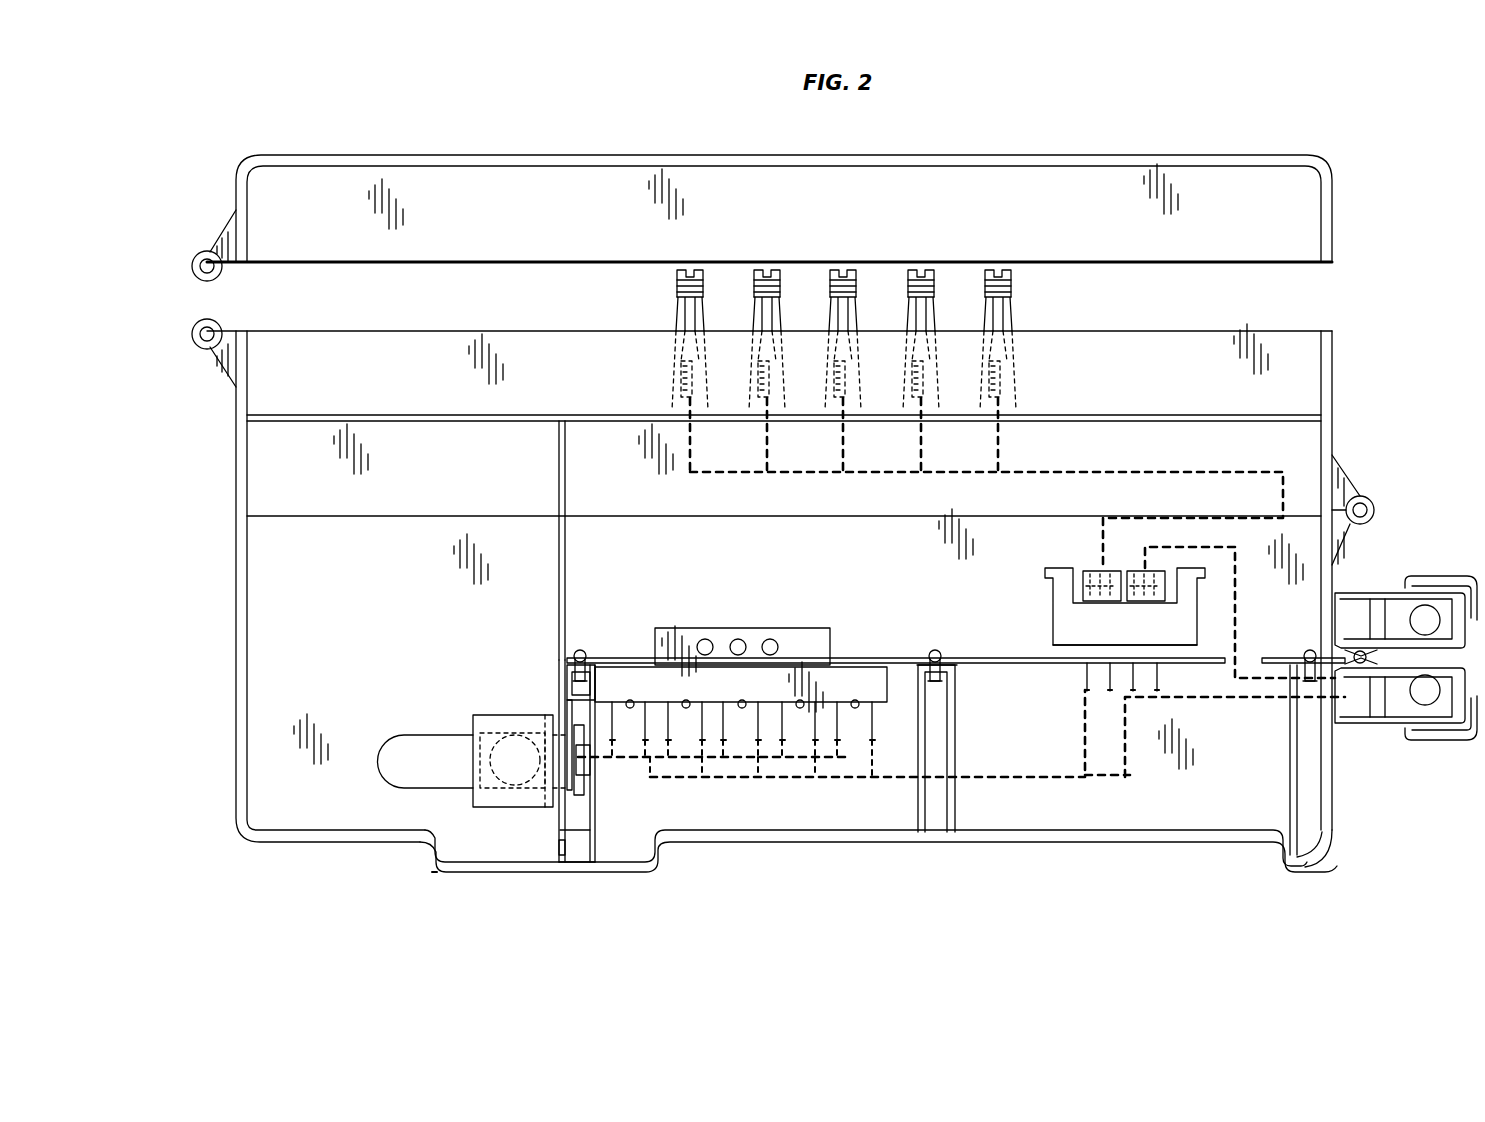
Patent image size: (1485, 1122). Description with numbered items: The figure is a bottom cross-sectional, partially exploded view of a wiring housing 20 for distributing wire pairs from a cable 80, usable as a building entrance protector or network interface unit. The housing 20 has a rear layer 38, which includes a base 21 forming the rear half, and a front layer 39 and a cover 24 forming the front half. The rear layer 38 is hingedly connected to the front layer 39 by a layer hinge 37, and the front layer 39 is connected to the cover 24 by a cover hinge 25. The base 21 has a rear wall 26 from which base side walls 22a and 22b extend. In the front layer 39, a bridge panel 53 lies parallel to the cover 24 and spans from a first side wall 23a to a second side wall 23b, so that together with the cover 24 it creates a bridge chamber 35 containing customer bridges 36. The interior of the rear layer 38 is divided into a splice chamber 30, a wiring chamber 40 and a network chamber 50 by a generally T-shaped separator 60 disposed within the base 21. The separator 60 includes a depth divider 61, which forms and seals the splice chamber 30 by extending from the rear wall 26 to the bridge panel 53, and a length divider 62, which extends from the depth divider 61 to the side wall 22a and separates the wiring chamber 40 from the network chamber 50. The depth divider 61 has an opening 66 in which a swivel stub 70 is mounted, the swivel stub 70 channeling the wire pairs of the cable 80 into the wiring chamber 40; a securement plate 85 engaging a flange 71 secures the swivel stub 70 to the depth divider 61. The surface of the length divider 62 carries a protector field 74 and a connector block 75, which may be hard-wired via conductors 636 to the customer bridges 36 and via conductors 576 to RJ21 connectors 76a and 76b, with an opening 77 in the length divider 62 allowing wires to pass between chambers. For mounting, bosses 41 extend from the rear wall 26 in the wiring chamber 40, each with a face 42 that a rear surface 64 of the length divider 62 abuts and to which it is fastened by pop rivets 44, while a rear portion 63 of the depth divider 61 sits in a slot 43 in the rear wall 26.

The wiring housing 20 is at (918, 140).
The base 21 is at (757, 852).
The cover 24 is at (1174, 154).
The cover hinge 25 is at (203, 260).
The rear wall 26 is at (765, 832).
The splice chamber 30 is at (416, 617).
The bridge chamber 35 is at (1112, 308).
The customer bridges 36 is at (763, 266).
The layer hinge 37 is at (1372, 490).
The rear layer 38 is at (240, 630).
The front layer 39 is at (238, 415).
The wiring chamber 40 is at (1034, 750).
The bosses 41 is at (590, 808).
The face 42 is at (924, 664).
The slot 43 is at (562, 864).
The pop rivets 44 is at (580, 654).
The network chamber 50 is at (869, 577).
The bridge panel 53 is at (1114, 412).
The separator 60 is at (566, 568).
The depth divider 61 is at (559, 502).
The length divider 62 is at (988, 658).
The rear portion 63 is at (556, 840).
The rear surface 64 is at (1020, 662).
The opening 66 is at (556, 718).
The swivel stub 70 is at (487, 715).
The flange 71 is at (586, 790).
The protector field 74 is at (748, 628).
The connector block 75 is at (1048, 568).
The RJ21 connector 76a is at (1437, 588).
The RJ21 connector 76b is at (1440, 728).
The opening 77 is at (1244, 652).
The cable 80 is at (396, 736).
The securement plate 85 is at (584, 842).
The conductors 576 is at (1240, 714).
The conductors 636 is at (1144, 470).
The base side wall 22a is at (1332, 560).
The base side wall 22b is at (236, 714).
The first side wall 23a is at (1334, 402).
The second side wall 23b is at (234, 496).